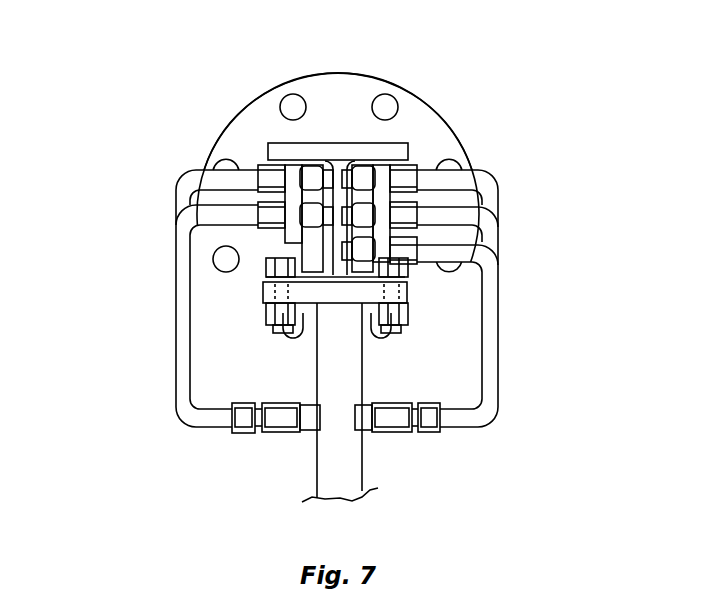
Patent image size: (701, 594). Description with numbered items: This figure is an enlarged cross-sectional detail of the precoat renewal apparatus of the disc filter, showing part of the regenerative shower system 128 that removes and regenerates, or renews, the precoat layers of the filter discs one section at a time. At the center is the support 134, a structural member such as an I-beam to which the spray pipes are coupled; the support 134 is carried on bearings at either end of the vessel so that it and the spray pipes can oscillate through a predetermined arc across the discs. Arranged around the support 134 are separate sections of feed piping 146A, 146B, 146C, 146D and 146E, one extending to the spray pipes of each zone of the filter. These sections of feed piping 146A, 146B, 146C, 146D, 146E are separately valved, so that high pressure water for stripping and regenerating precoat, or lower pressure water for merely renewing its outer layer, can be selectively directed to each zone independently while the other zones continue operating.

The regenerative shower system 128 is at (537, 116).
The support 134 is at (351, 143).
The feed piping 146A is at (498, 351).
The feed piping 146B is at (498, 240).
The feed piping 146C is at (498, 202).
The feed piping 146D is at (178, 348).
The feed piping 146E is at (176, 196).